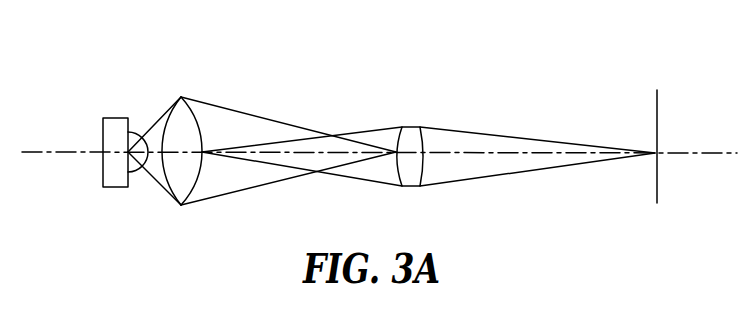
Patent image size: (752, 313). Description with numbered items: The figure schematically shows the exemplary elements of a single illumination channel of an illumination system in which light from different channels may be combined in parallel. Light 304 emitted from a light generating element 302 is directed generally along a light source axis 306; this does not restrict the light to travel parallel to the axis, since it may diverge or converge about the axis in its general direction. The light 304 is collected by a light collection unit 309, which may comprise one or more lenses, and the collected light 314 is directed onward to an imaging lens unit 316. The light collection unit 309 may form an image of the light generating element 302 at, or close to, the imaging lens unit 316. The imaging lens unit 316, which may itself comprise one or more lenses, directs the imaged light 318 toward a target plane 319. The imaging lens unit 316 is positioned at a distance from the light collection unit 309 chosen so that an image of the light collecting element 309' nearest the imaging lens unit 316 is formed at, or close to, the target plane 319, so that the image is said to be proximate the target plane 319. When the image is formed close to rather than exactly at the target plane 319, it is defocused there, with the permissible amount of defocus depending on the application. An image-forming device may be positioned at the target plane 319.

The light generating element 302 is at (128, 152).
The light 304 is at (153, 180).
The light source axis 306 is at (55, 153).
The light collection unit 309 is at (198, 128).
The light collecting element 309' is at (215, 170).
The collected light 314 is at (248, 113).
The imaging lens unit 316 is at (408, 126).
The imaged light 318 is at (500, 136).
The target plane 319 is at (657, 112).